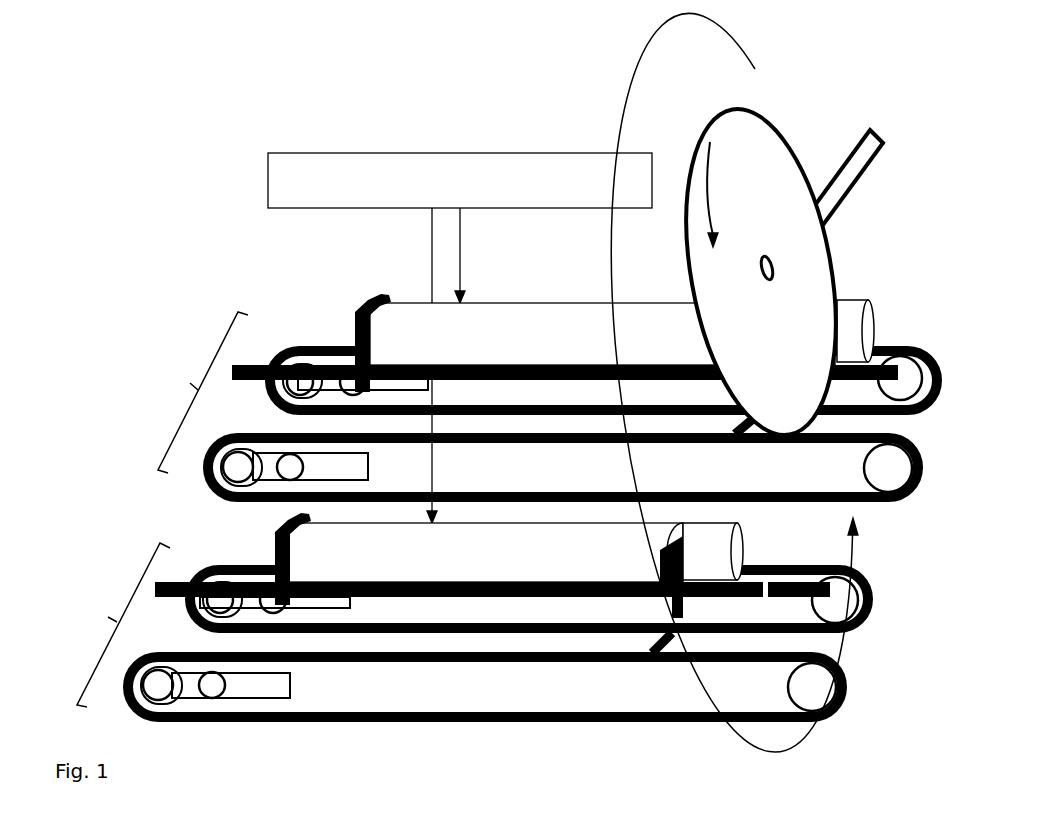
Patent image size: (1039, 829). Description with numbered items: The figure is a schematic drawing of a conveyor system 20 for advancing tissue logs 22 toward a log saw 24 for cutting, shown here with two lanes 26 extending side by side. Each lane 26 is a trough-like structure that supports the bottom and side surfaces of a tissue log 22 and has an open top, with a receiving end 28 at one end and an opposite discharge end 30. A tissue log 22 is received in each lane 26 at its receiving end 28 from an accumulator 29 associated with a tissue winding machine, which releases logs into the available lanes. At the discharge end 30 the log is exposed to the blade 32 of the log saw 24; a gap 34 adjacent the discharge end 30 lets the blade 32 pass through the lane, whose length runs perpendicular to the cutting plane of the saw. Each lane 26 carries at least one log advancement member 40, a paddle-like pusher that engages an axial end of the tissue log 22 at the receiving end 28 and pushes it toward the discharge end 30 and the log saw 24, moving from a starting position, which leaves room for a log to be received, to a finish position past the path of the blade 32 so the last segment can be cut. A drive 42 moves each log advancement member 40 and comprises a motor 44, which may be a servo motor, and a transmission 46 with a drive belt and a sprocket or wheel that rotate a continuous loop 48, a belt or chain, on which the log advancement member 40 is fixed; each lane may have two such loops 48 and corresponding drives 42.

The conveyor system 20 is at (197, 162).
The tissue log 22 is at (561, 442).
The log saw 24 is at (899, 120).
The lane 26 is at (507, 538).
The receiving end 28 is at (262, 365).
The accumulator 29 is at (460, 338).
The discharge end 30 is at (887, 340).
The blade 32 is at (768, 163).
The gap 34 is at (767, 565).
The log advancement member 40 is at (373, 293).
The drive 42 is at (358, 463).
The motor 44 is at (238, 687).
The transmission 46 is at (187, 690).
The continuous loop 48 is at (337, 722).